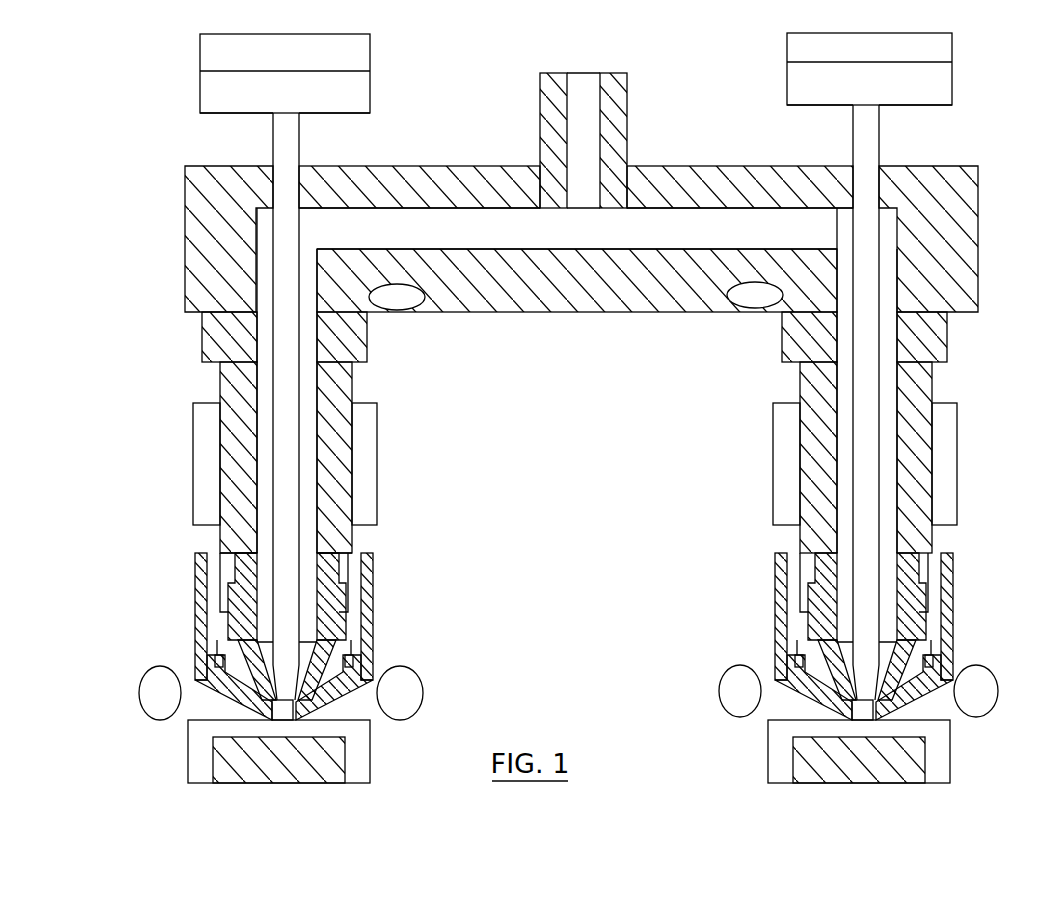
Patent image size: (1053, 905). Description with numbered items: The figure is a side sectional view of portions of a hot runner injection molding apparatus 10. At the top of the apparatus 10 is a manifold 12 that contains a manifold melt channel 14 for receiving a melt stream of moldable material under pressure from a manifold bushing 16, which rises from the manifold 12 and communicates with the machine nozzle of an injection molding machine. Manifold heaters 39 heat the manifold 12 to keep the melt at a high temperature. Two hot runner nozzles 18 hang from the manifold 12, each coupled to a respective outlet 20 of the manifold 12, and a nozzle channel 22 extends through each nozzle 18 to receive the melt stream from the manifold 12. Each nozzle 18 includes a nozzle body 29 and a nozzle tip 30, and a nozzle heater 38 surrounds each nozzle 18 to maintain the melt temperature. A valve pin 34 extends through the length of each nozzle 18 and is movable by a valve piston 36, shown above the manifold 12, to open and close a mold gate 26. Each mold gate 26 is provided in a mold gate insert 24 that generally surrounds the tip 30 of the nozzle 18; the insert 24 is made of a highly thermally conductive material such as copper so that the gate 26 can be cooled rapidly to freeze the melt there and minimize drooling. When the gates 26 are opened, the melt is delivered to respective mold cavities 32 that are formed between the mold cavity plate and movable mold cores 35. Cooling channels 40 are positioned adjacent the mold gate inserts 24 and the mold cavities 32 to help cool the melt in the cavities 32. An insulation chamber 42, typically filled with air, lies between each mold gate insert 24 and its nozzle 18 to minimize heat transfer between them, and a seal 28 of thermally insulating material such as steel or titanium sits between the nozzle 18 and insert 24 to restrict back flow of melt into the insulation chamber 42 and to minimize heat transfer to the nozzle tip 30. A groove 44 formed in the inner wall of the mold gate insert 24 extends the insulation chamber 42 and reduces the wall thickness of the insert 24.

The injection molding apparatus 10 is at (166, 195).
The manifold 12 is at (704, 186).
The manifold melt channel 14 is at (665, 243).
The manifold bushing 16 is at (616, 102).
The hot runner nozzle 18 is at (332, 403).
The outlet 20 is at (900, 322).
The nozzle channel 22 is at (263, 388).
The mold gate insert 24 is at (370, 578).
The mold gate 26 is at (277, 710).
The seal 28 is at (345, 625).
The nozzle body 29 is at (343, 540).
The nozzle tip 30 is at (232, 552).
The mold cavity 32 is at (935, 762).
The valve pin 34 is at (870, 398).
The movable mold core 35 is at (283, 770).
The valve piston 36 is at (935, 80).
The nozzle heater 38 is at (945, 468).
The manifold heater 39 is at (755, 308).
The cooling channel 40 is at (985, 685).
The insulation chamber 42 is at (207, 612).
The groove 44 is at (350, 655).